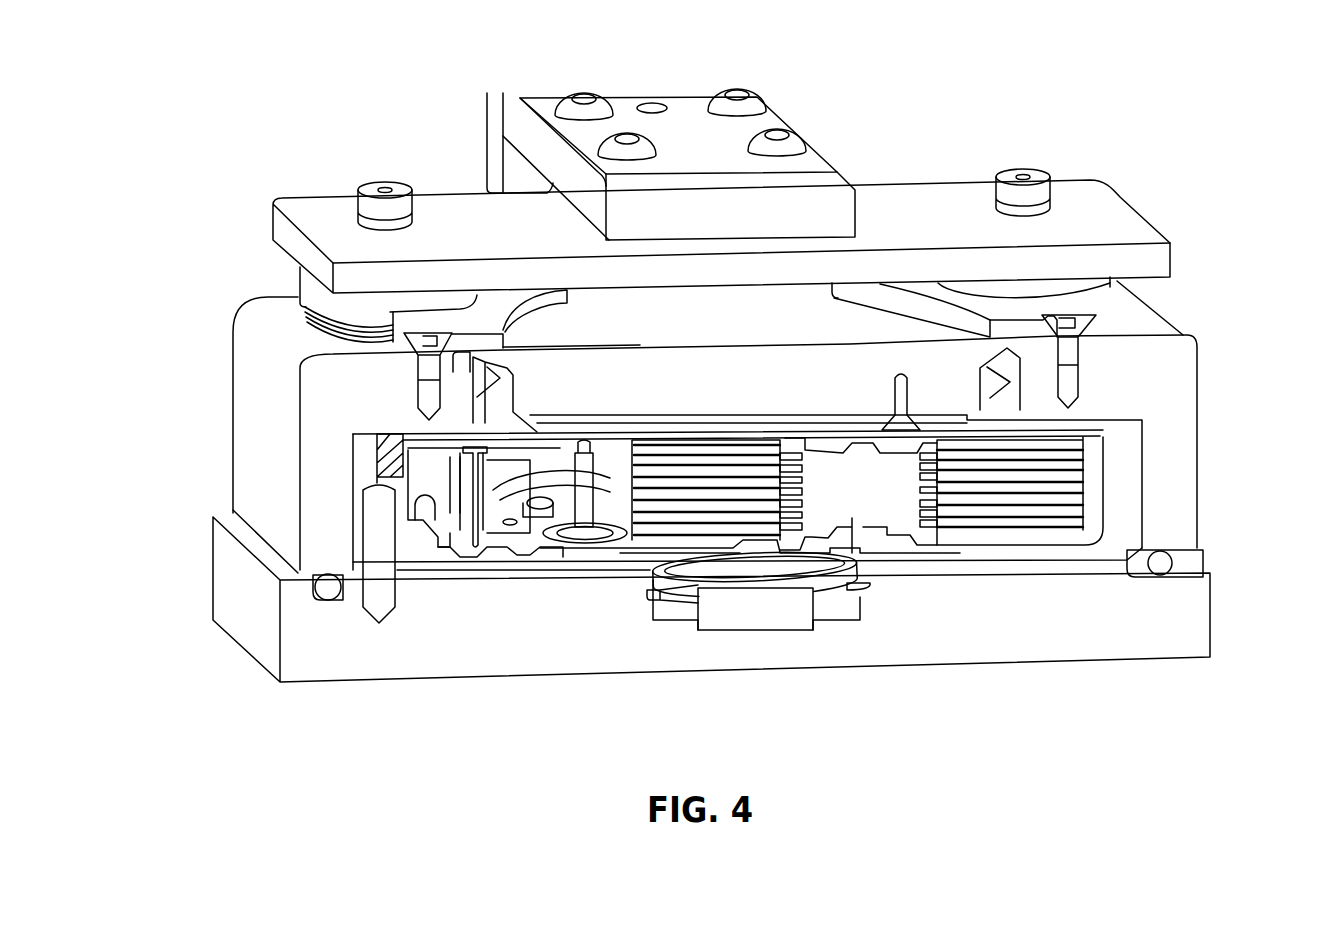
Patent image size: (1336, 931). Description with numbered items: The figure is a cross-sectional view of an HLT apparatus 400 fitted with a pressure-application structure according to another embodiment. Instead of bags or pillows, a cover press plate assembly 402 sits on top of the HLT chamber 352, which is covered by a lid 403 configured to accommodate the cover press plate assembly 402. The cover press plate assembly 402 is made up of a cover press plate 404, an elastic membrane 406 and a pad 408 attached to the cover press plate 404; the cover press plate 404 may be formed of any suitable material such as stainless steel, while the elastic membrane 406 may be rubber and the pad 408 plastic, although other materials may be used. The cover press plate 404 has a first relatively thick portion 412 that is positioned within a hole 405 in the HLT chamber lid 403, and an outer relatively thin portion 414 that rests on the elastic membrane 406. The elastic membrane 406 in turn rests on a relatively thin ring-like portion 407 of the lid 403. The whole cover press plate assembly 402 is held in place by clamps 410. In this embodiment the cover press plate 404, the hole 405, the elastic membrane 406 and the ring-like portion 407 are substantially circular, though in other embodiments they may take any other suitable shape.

The HLT apparatus 400 is at (263, 108).
The cover press plate assembly 402 is at (547, 316).
The lid 403 is at (353, 345).
The cover press plate 404 is at (693, 402).
The hole 405 is at (960, 430).
The elastic membrane 406 is at (1000, 393).
The ring-like portion 407 is at (495, 425).
The pad 408 is at (810, 428).
The clamps 410 is at (485, 312).
The first relatively thick portion 412 is at (810, 362).
The outer relatively thin portion 414 is at (470, 365).
The HLT chamber 352 is at (355, 455).